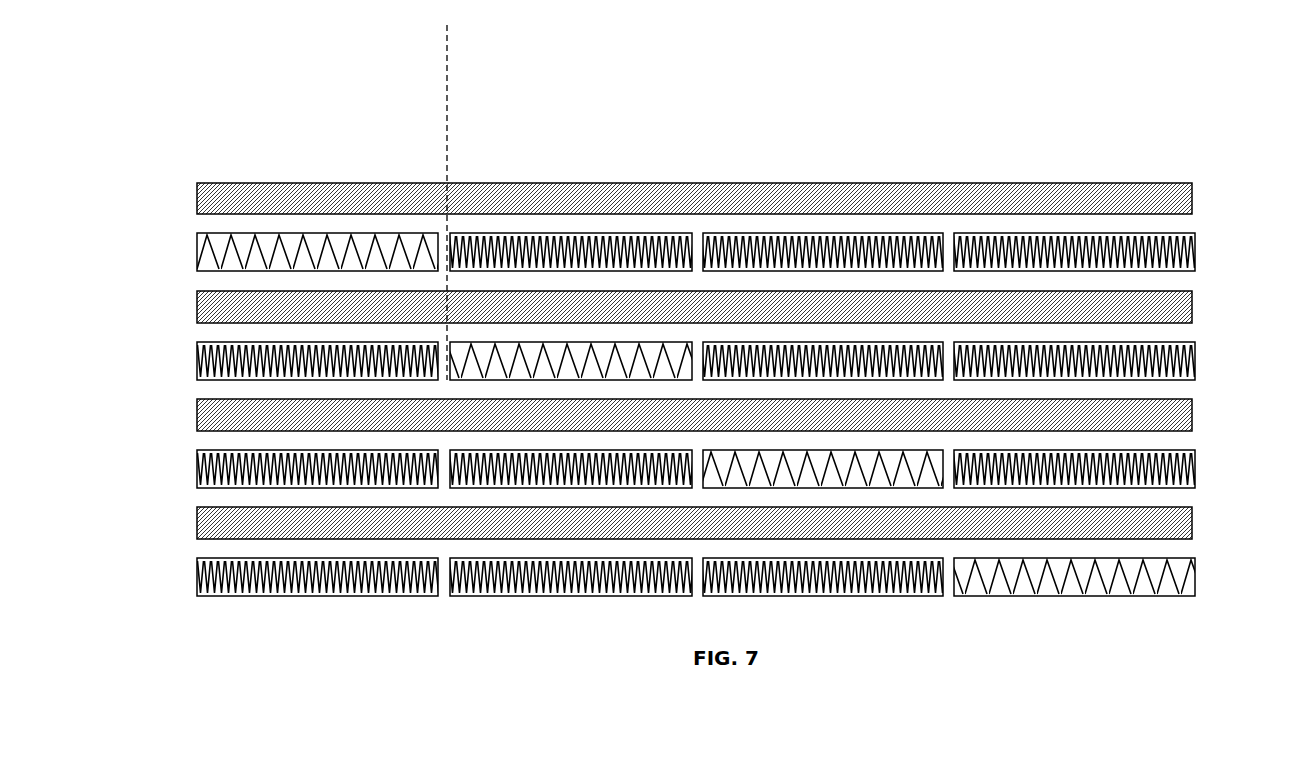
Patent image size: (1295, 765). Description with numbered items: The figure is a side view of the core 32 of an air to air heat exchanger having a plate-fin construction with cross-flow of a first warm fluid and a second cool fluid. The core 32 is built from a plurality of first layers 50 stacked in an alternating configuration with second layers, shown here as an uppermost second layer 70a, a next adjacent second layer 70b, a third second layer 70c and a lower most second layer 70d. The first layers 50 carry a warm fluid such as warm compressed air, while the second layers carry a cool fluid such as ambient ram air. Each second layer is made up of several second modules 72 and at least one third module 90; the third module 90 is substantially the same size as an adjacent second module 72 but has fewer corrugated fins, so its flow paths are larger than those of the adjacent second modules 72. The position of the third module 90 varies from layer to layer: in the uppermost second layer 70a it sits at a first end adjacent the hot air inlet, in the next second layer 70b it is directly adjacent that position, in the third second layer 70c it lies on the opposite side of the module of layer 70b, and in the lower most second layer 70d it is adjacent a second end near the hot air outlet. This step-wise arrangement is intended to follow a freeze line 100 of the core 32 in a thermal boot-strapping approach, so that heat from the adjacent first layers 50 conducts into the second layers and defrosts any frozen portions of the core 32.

The freeze line 100 is at (447, 117).
The core 32 is at (268, 156).
The first layer 50 is at (1194, 200).
The uppermost second layer 70a is at (1200, 251).
The next adjacent second layer 70b is at (1200, 361).
The third second layer 70c is at (1200, 469).
The lower most second layer 70d is at (1203, 577).
The second module 72 is at (492, 235).
The third module 90 is at (240, 235).